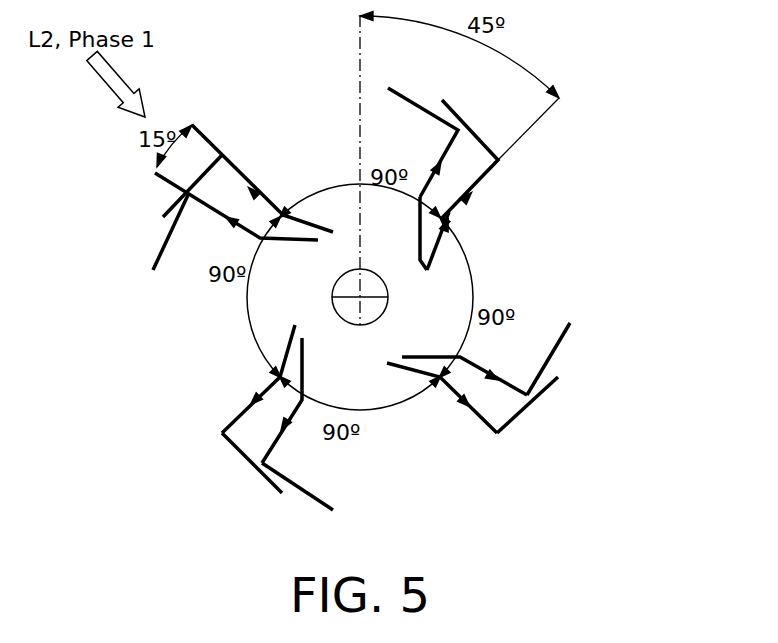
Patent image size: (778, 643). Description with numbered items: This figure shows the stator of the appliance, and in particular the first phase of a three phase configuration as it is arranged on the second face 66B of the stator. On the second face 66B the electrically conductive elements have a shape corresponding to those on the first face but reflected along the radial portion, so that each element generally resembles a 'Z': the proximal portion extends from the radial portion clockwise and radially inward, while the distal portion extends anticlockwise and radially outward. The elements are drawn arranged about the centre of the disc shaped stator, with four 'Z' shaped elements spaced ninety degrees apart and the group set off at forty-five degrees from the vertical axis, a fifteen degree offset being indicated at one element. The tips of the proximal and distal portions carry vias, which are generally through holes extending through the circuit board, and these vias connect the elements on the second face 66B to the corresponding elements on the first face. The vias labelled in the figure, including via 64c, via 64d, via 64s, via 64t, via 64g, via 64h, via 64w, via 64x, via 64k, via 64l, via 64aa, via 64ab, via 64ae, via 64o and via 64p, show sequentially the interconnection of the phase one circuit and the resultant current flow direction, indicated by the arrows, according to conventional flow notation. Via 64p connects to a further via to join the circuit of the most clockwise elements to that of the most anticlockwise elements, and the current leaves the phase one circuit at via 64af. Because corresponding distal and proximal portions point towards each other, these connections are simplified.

The second face 66B is at (617, 160).
The via 64c is at (333, 232).
The via 64d is at (163, 217).
The via 64s is at (318, 240).
The via 64t is at (153, 270).
The via 64af is at (388, 88).
The via 64o is at (430, 272).
The via 64p is at (442, 100).
The via 64ae is at (435, 257).
The via 64g is at (295, 325).
The via 64h is at (282, 493).
The via 64w is at (302, 338).
The via 64x is at (333, 510).
The via 64aa is at (402, 357).
The via 64ab is at (570, 323).
The via 64k is at (387, 363).
The via 64l is at (558, 377).